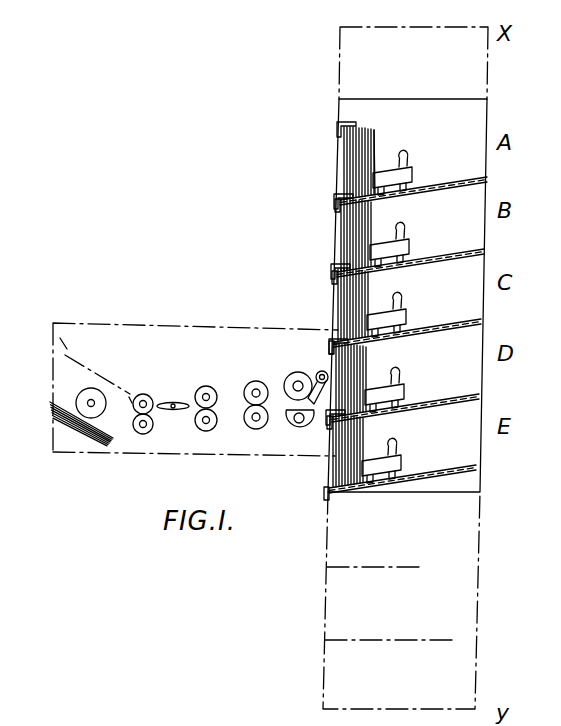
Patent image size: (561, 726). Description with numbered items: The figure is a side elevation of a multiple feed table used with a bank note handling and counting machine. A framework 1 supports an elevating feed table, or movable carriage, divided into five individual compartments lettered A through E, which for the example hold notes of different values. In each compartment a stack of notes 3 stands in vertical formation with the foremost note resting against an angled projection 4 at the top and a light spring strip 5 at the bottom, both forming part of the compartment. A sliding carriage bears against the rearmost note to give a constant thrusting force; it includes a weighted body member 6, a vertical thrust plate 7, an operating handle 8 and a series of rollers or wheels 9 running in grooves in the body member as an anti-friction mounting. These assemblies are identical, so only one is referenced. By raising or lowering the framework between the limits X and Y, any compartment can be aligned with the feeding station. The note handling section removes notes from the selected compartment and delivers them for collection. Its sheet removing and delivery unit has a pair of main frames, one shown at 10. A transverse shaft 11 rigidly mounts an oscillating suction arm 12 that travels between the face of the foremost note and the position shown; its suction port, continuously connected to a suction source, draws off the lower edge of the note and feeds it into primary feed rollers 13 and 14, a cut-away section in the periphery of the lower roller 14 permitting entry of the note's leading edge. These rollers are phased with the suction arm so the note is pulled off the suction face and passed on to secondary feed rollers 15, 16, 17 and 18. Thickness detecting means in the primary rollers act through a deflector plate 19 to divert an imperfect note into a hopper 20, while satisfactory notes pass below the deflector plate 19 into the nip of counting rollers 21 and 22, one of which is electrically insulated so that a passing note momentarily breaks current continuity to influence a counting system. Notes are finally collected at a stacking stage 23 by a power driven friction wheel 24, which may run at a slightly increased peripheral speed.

The framework 1 is at (473, 127).
The stack of notes 3 is at (367, 126).
The angled projection 4 is at (336, 128).
The light spring strip 5 is at (337, 200).
The weighted body member 6 is at (412, 178).
The vertical thrust plate 7 is at (380, 142).
The operating handle 8 is at (405, 150).
The rollers or wheels 9 is at (402, 187).
The main frame 10 is at (166, 323).
The transverse shaft 11 is at (325, 371).
The oscillating suction arm 12 is at (318, 373).
The primary feed roller 13 is at (296, 372).
The primary feed roller 14 is at (298, 432).
The secondary feed roller 15 is at (256, 381).
The secondary feed roller 16 is at (256, 430).
The secondary feed roller 17 is at (205, 386).
The secondary feed roller 18 is at (206, 432).
The deflector plate 19 is at (173, 411).
The hopper 20 is at (88, 370).
The counting roller 21 is at (143, 393).
The counting roller 22 is at (143, 435).
The stacking stage 23 is at (52, 426).
The power driven friction wheel 24 is at (80, 399).